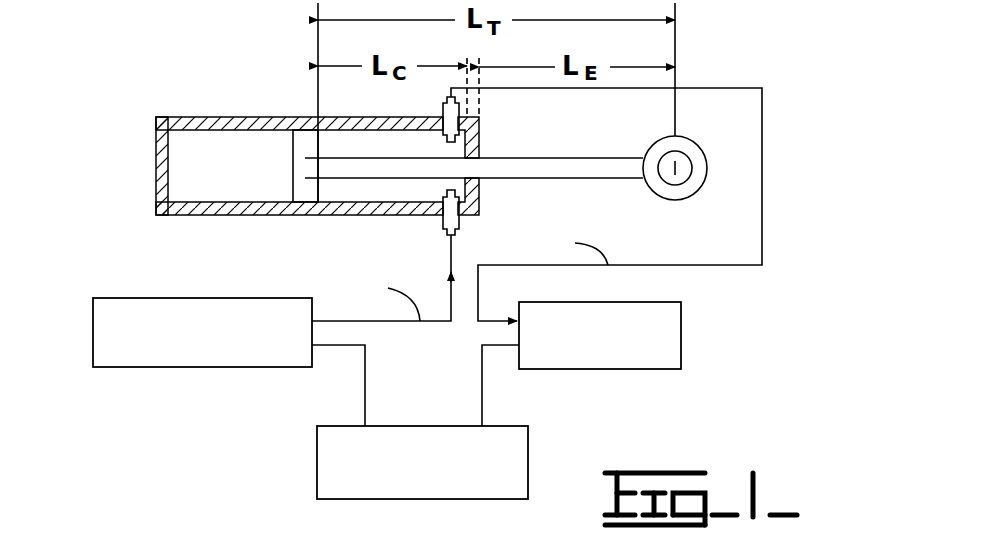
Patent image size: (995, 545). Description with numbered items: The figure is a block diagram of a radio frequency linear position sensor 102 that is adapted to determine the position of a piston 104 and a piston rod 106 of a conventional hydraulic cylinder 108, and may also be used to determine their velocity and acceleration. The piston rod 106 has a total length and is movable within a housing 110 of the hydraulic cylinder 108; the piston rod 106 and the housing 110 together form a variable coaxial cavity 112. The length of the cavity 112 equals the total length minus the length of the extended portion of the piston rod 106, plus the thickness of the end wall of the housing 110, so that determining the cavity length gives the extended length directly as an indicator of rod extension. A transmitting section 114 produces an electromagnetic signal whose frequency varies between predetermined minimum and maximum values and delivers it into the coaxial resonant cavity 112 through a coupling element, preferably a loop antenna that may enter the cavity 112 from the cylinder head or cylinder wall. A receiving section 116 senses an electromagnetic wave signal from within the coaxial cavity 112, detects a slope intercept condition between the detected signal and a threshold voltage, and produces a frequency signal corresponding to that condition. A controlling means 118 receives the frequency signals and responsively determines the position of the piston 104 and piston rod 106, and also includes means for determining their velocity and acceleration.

The RF linear position sensor 102 is at (238, 413).
The piston 104 is at (292, 176).
The piston rod 106 is at (545, 158).
The hydraulic cylinder 108 is at (133, 189).
The housing 110 is at (243, 215).
The coaxial resonant cavity 112 is at (408, 155).
The transmitting section 114 is at (280, 298).
The receiving section 116 is at (628, 302).
The controlling means 118 is at (505, 426).